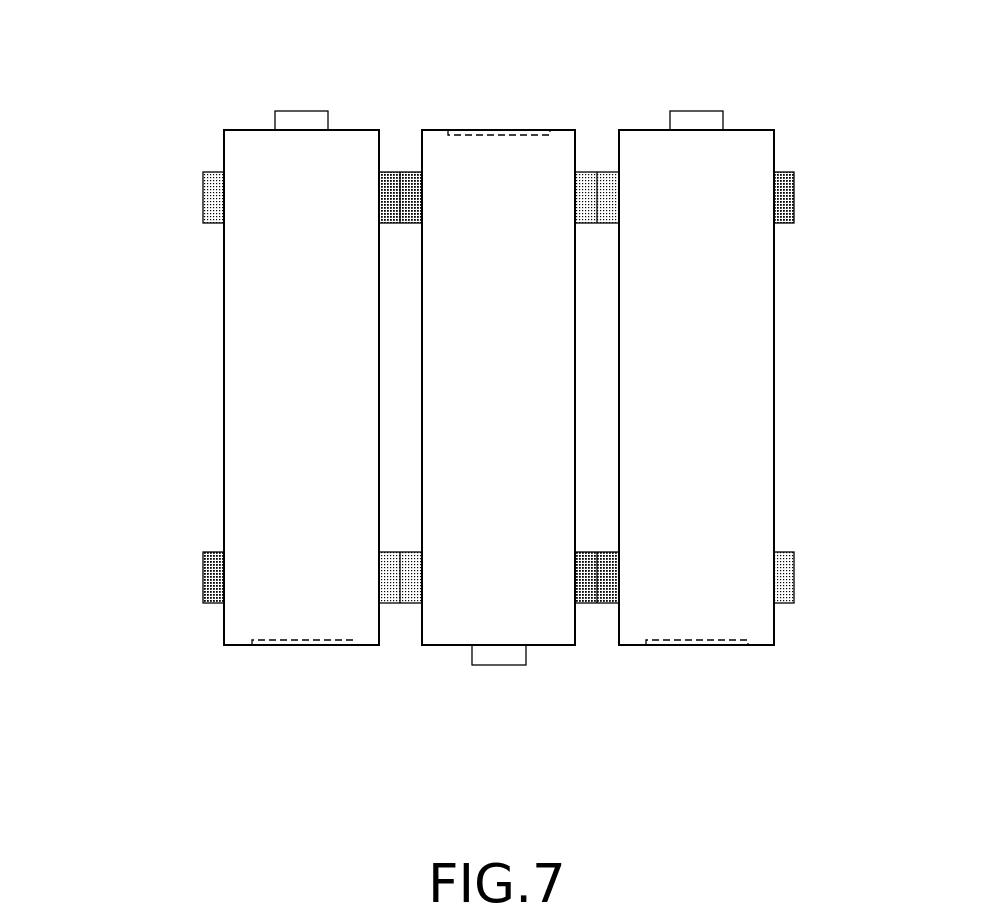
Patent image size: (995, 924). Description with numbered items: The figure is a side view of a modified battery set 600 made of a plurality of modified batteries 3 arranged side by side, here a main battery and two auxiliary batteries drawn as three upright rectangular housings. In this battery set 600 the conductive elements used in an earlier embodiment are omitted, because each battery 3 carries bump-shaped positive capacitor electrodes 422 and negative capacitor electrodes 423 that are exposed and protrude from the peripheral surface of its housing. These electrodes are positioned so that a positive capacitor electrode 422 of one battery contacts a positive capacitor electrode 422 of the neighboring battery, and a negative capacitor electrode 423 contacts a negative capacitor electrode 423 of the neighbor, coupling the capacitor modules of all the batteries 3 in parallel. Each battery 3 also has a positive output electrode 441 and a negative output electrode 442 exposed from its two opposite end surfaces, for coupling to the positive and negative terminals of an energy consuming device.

The battery set 600 is at (168, 95).
The battery 3 is at (241, 130).
The positive output electrode 441 is at (293, 118).
The negative output electrode 442 is at (500, 133).
The positive capacitor electrode 422 is at (414, 172).
The negative capacitor electrode 423 is at (610, 178).